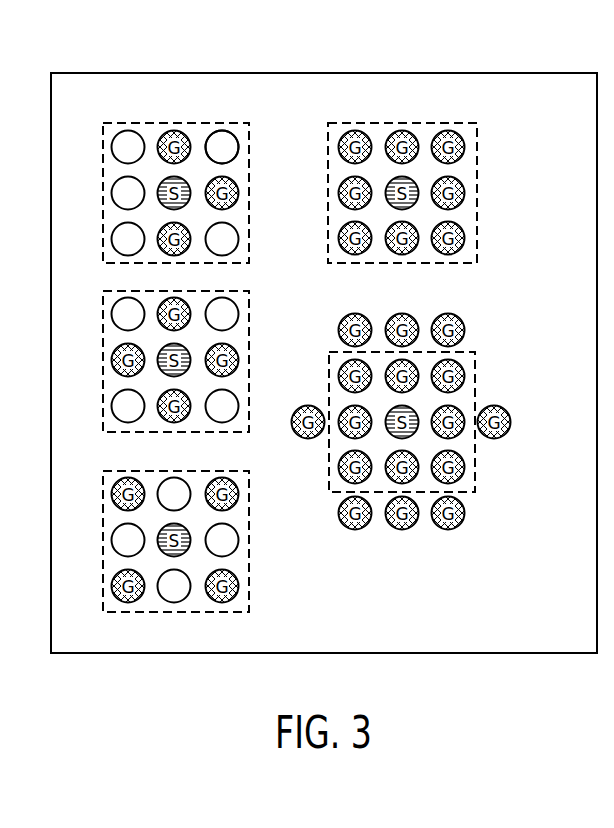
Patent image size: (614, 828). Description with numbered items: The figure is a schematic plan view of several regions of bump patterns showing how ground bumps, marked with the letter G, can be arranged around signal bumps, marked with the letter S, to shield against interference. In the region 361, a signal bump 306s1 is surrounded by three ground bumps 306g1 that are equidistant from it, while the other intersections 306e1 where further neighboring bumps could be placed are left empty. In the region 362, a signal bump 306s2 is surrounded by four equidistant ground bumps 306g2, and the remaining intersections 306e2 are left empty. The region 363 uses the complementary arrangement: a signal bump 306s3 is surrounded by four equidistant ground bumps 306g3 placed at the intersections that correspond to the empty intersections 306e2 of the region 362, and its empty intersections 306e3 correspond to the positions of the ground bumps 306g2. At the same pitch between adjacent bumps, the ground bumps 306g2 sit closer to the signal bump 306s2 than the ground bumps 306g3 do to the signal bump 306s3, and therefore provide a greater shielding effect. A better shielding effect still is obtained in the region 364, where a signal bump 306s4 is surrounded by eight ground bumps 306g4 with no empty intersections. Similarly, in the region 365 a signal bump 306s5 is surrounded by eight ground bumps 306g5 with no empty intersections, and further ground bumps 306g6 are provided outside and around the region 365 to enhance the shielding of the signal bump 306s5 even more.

The ground bumps 306g1 is at (175, 130).
The region 361 is at (192, 122).
The signal bump 306s1 is at (168, 180).
The empty intersections 306e1 is at (218, 130).
The region 362 is at (252, 296).
The signal bump 306s2 is at (187, 352).
The ground bumps 306g2 is at (234, 360).
The empty intersections 306e2 is at (238, 404).
The ground bumps 306g3 is at (237, 493).
The signal bump 306s3 is at (187, 532).
The region 363 is at (251, 541).
The empty intersections 306e3 is at (235, 550).
The ground bumps 306g4 is at (463, 147).
The region 364 is at (478, 196).
The signal bump 306s4 is at (415, 200).
The region 365 is at (477, 354).
The signal bump 306s5 is at (417, 410).
The ground bumps 306g5 is at (463, 463).
The ground bumps 306g6 is at (463, 512).